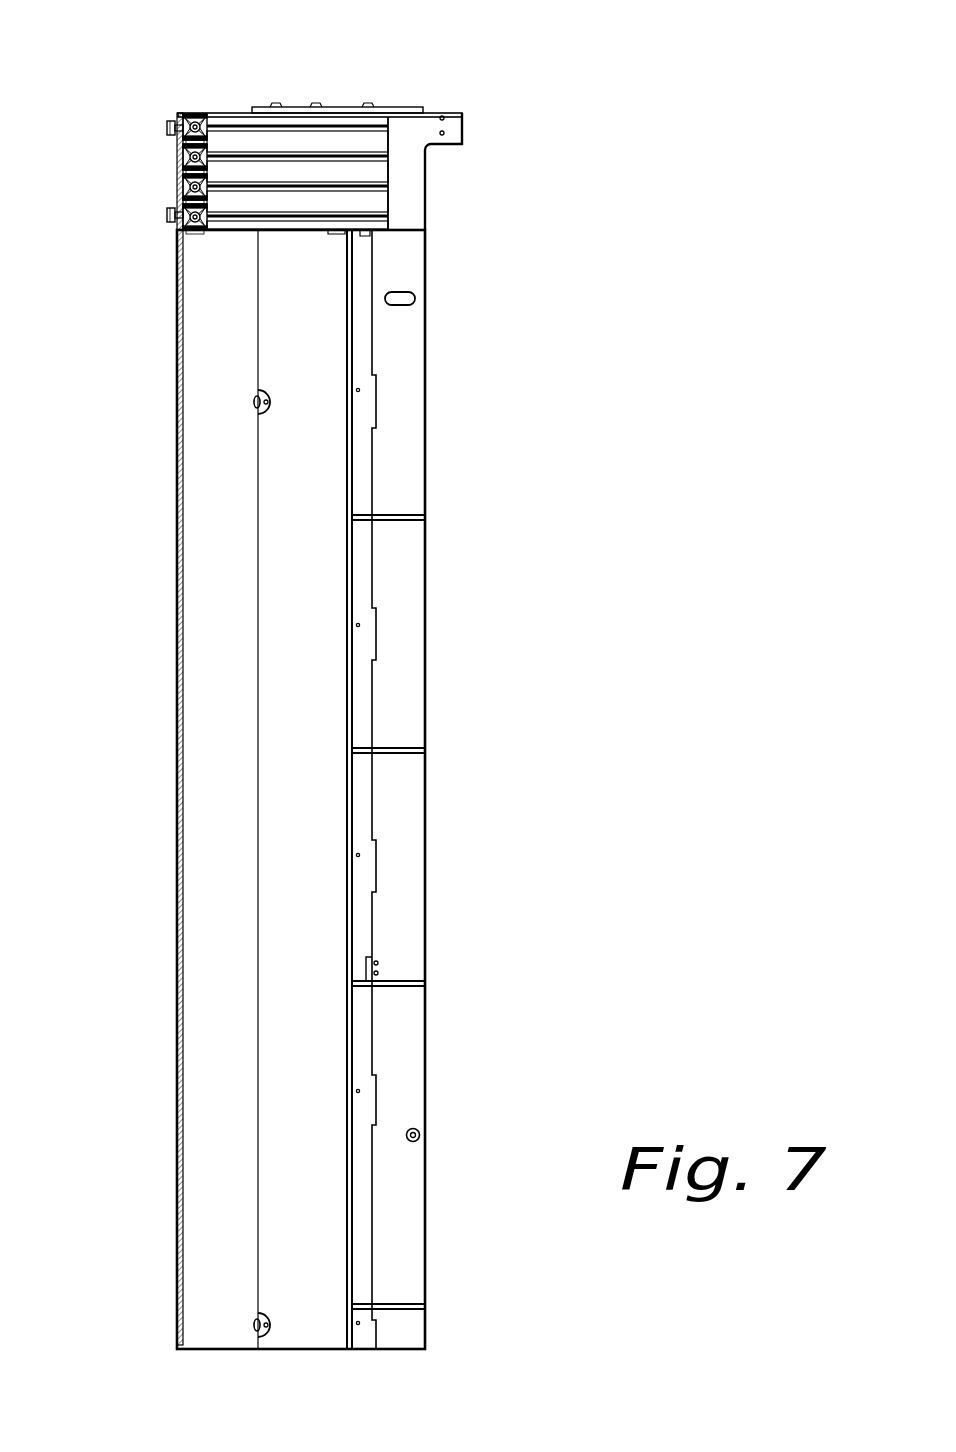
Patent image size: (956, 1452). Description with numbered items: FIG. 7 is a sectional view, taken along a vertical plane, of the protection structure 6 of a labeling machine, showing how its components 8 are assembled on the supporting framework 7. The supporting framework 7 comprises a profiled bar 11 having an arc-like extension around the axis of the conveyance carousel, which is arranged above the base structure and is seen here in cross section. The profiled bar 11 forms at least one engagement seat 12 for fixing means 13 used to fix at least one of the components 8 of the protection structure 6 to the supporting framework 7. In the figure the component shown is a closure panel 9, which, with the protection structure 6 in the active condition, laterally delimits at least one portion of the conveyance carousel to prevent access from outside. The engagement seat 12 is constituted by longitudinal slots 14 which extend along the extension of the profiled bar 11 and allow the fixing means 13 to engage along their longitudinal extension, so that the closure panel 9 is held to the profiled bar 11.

The protection structure 6 is at (286, 675).
The supporting framework 7 is at (429, 172).
The components 8 is at (148, 476).
The closure panel 9 is at (175, 639).
The profiled bar 11 is at (241, 120).
The engagement seat 12 is at (288, 112).
The fixing means 13 is at (163, 128).
The longitudinal slots 14 is at (340, 123).